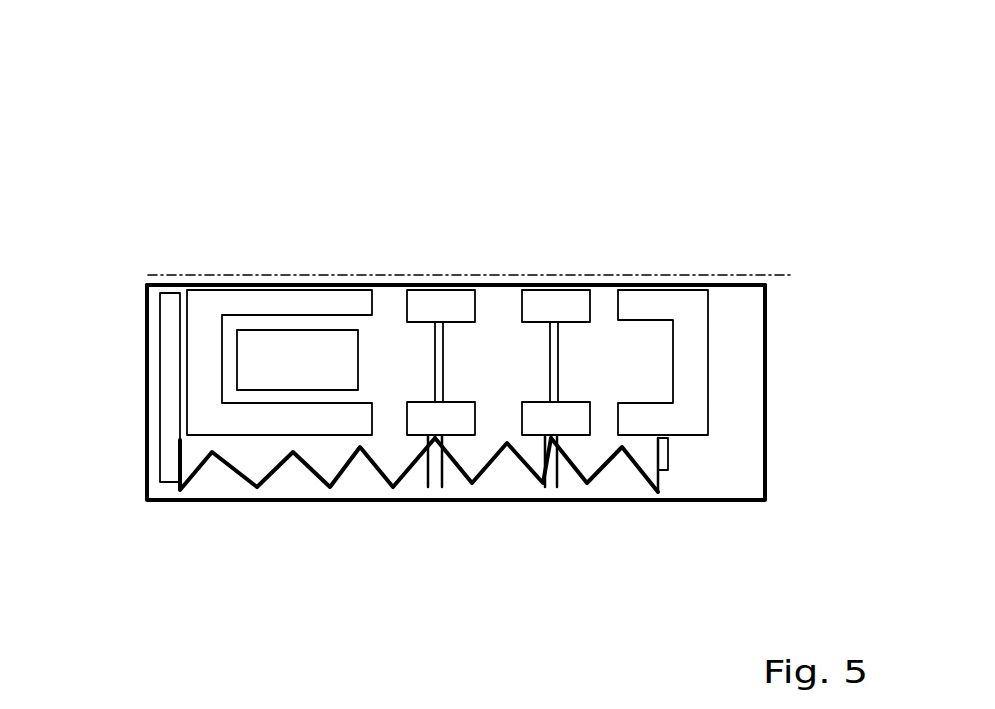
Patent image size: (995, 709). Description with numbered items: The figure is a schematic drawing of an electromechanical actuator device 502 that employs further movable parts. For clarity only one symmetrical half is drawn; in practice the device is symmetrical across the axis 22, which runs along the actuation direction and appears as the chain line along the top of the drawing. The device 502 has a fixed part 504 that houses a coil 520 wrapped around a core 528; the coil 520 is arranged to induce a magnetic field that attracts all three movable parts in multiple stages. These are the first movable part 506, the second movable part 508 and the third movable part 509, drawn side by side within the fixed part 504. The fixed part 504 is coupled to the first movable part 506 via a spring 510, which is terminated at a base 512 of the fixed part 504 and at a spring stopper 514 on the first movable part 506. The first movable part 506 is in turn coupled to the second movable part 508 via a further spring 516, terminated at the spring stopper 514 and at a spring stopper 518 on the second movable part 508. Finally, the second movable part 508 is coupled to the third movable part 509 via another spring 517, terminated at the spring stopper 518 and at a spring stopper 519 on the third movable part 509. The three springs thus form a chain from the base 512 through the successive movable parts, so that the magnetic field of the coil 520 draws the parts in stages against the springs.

The axis 22 is at (495, 277).
The electromechanical actuator device 502 is at (101, 207).
The fixed part 504 is at (248, 258).
The first movable part 506 is at (467, 251).
The second movable part 508 is at (562, 253).
The third movable part 509 is at (667, 253).
The spring 510 is at (310, 464).
The base 512 is at (157, 425).
The spring stopper 514 is at (436, 462).
The further spring 516 is at (519, 458).
The spring 517 is at (634, 462).
The spring stopper 518 is at (549, 462).
The spring stopper 519 is at (660, 472).
The coil 520 is at (267, 352).
The core 528 is at (350, 296).